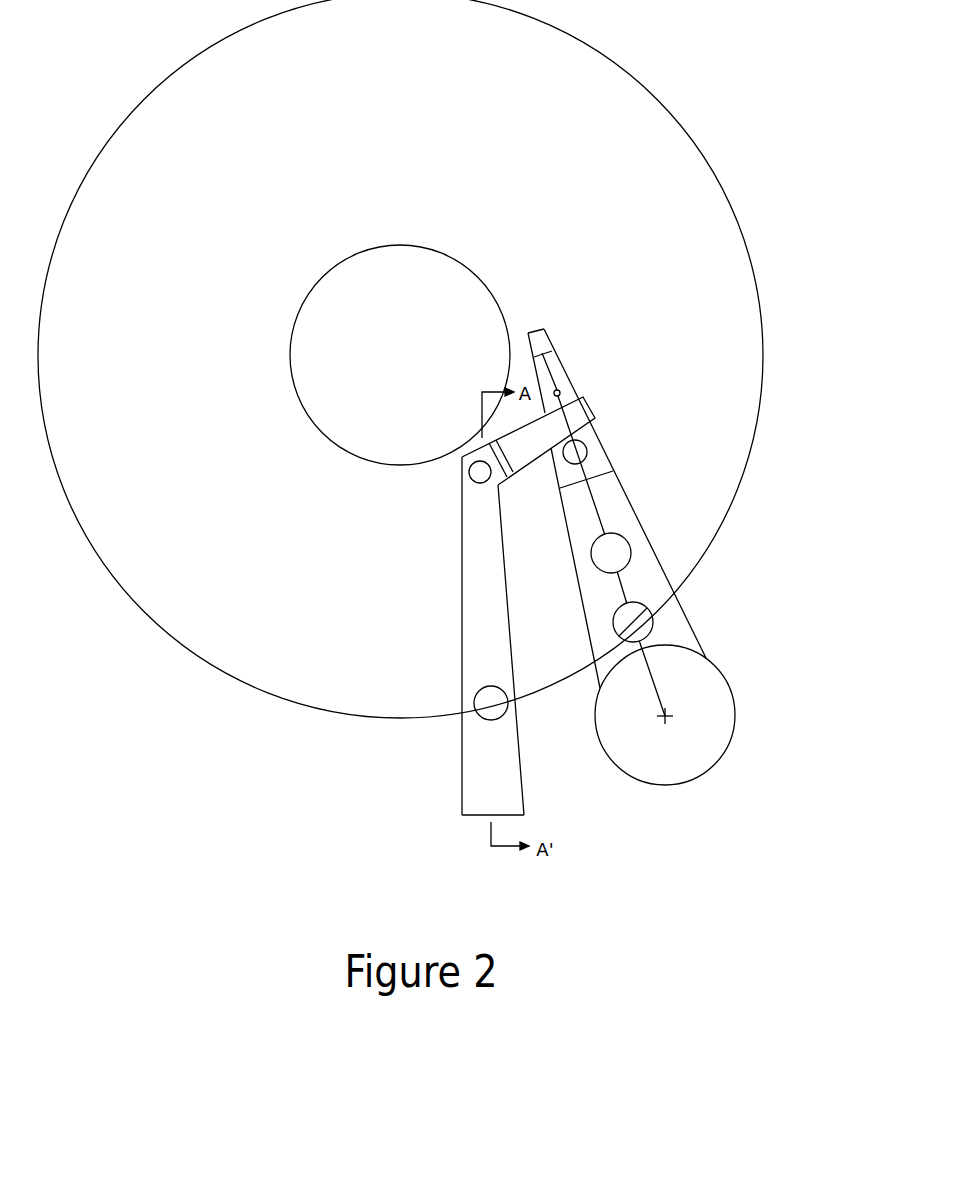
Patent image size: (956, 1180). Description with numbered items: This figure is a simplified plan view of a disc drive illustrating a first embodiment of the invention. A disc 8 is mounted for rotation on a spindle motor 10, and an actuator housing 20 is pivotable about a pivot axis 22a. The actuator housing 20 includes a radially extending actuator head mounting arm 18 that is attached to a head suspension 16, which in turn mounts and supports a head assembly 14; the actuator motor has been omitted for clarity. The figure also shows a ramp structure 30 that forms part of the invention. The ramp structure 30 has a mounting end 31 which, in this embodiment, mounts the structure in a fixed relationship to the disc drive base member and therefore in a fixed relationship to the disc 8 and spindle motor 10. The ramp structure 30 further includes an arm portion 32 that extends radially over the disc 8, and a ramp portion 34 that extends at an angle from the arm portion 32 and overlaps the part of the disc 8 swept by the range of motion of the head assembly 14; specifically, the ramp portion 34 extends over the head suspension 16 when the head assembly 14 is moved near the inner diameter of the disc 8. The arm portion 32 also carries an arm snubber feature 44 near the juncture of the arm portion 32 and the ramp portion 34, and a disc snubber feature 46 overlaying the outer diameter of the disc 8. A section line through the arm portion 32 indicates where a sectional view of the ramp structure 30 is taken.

The disc 8 is at (187, 547).
The spindle motor 10 is at (318, 353).
The head assembly 14 is at (540, 338).
The head suspension 16 is at (568, 378).
The actuator head mounting arm 18 is at (647, 565).
The actuator housing 20 is at (715, 690).
The pivot axis 22a is at (665, 716).
The ramp structure 30 is at (462, 772).
The mounting end 31 is at (492, 795).
The arm portion 32 is at (483, 584).
The ramp portion 34 is at (527, 442).
The arm snubber feature 44 is at (480, 472).
The disc snubber feature 46 is at (490, 703).